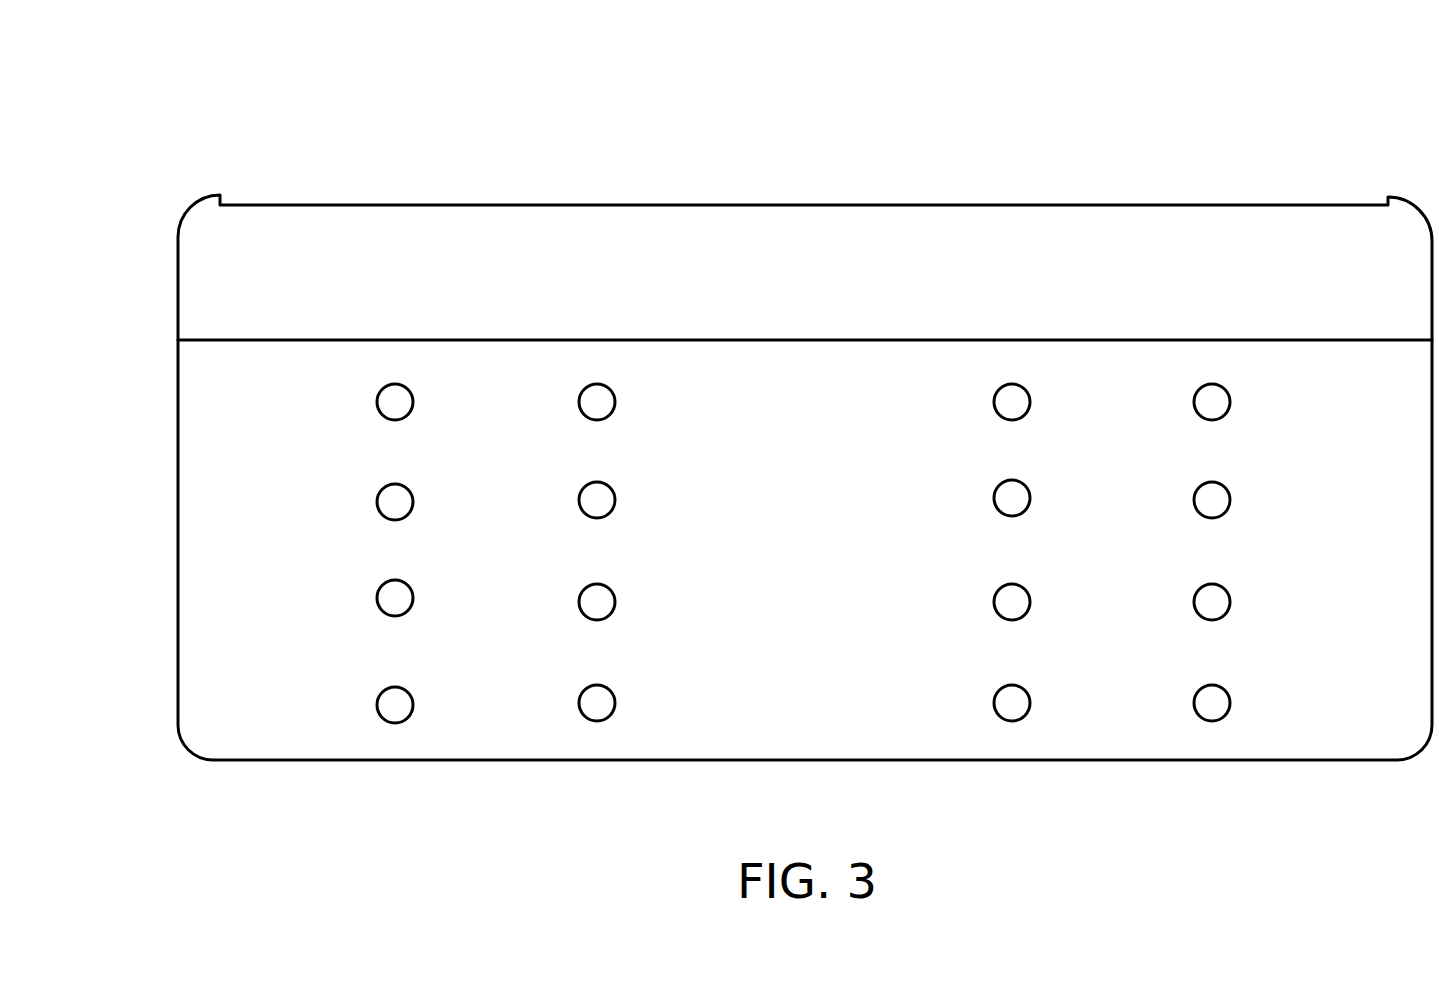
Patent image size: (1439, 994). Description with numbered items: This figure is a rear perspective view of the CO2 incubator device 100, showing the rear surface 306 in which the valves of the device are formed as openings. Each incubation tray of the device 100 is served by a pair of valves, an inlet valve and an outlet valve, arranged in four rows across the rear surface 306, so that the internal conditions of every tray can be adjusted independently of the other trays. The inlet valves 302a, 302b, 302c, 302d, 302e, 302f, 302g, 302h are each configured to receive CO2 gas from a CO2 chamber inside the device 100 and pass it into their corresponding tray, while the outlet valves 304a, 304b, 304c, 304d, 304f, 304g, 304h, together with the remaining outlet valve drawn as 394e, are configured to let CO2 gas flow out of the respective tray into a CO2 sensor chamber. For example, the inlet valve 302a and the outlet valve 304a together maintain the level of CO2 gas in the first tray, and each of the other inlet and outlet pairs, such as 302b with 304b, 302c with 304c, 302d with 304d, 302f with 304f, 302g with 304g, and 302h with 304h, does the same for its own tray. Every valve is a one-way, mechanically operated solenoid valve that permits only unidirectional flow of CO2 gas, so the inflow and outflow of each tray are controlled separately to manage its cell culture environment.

The CO2 incubator device 100 is at (318, 172).
The rear surface 306 is at (1392, 395).
The inlet valve 302a is at (402, 402).
The inlet valve 302b is at (390, 502).
The inlet valve 302c is at (405, 598).
The inlet valve 302d is at (402, 705).
The inlet valve 302e is at (1012, 402).
The inlet valve 302f is at (1012, 498).
The inlet valve 302g is at (1020, 600).
The inlet valve 302h is at (1020, 702).
The outlet valve 304a is at (590, 402).
The outlet valve 304b is at (590, 500).
The outlet valve 304c is at (585, 612).
The outlet valve 304d is at (580, 704).
The port 394e is at (1205, 408).
The outlet valve 304f is at (1215, 497).
The outlet valve 304g is at (1215, 609).
The outlet valve 304h is at (1210, 703).